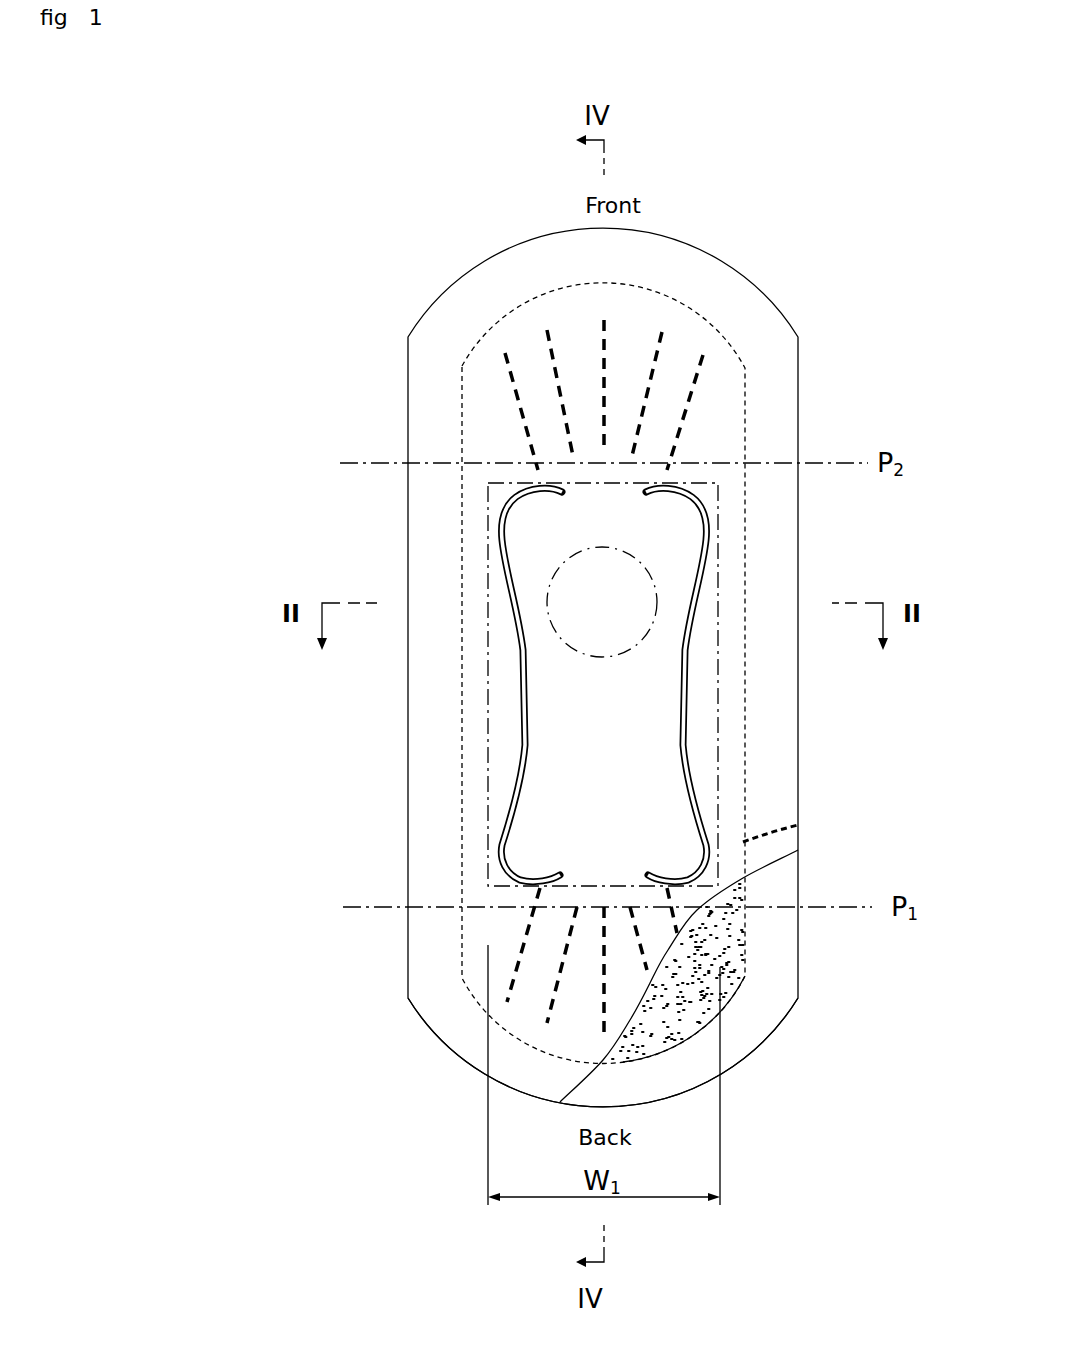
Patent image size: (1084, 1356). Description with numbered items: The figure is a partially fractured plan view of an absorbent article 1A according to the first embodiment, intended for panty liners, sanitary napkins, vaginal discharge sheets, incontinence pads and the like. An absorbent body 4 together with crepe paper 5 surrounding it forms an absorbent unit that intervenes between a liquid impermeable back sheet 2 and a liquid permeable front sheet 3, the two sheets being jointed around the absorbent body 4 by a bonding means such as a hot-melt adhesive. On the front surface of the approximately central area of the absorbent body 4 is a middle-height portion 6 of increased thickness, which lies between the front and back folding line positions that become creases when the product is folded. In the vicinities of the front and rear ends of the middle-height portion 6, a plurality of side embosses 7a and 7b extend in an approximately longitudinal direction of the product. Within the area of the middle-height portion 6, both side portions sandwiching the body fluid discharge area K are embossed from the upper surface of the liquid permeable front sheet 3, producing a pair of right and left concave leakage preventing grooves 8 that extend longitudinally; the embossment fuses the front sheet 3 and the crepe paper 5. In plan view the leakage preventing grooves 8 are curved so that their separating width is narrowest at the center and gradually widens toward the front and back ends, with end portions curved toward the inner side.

The absorbent article 1A is at (785, 295).
The liquid impermeable back sheet 2 is at (757, 1035).
The liquid permeable front sheet 3 is at (477, 938).
The absorbent body 4 is at (733, 955).
The crepe paper 5 is at (782, 847).
The middle-height portion 6 is at (703, 697).
The side embosses 7a is at (603, 320).
The side embosses 7b is at (597, 1058).
The leakage preventing grooves 8 is at (526, 748).
The body fluid discharge area K is at (589, 656).